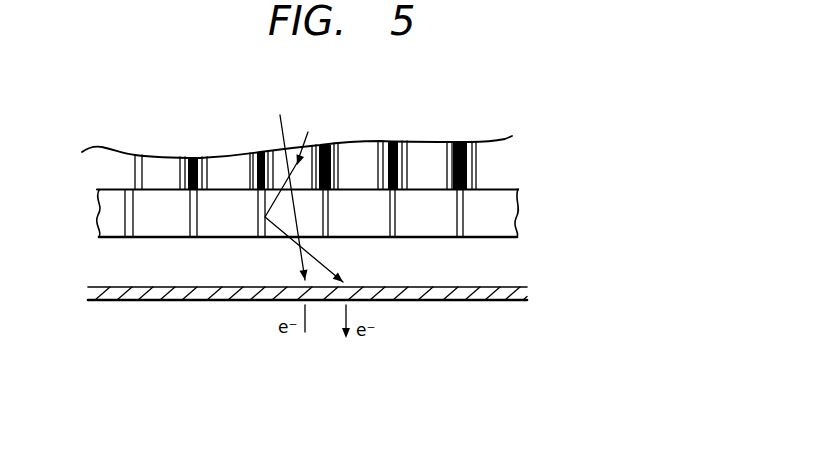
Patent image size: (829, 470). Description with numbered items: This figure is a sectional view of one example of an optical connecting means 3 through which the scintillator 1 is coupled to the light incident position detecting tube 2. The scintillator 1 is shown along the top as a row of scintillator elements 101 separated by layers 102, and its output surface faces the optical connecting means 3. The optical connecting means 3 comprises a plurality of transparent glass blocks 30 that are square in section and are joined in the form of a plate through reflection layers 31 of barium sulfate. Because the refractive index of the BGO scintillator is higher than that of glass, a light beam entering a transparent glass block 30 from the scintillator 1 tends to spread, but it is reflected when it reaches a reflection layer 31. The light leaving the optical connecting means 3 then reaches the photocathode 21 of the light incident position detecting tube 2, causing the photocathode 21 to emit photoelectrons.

The scintillator 1 is at (529, 192).
The scintillator element 101 is at (162, 158).
The reflecting layer 102 is at (325, 143).
The optical connecting means 3 is at (530, 212).
The transparent glass block 30 is at (155, 228).
The reflection layer 31 is at (127, 212).
The light incident position detecting tube 2 is at (532, 235).
The photocathode 21 is at (466, 300).